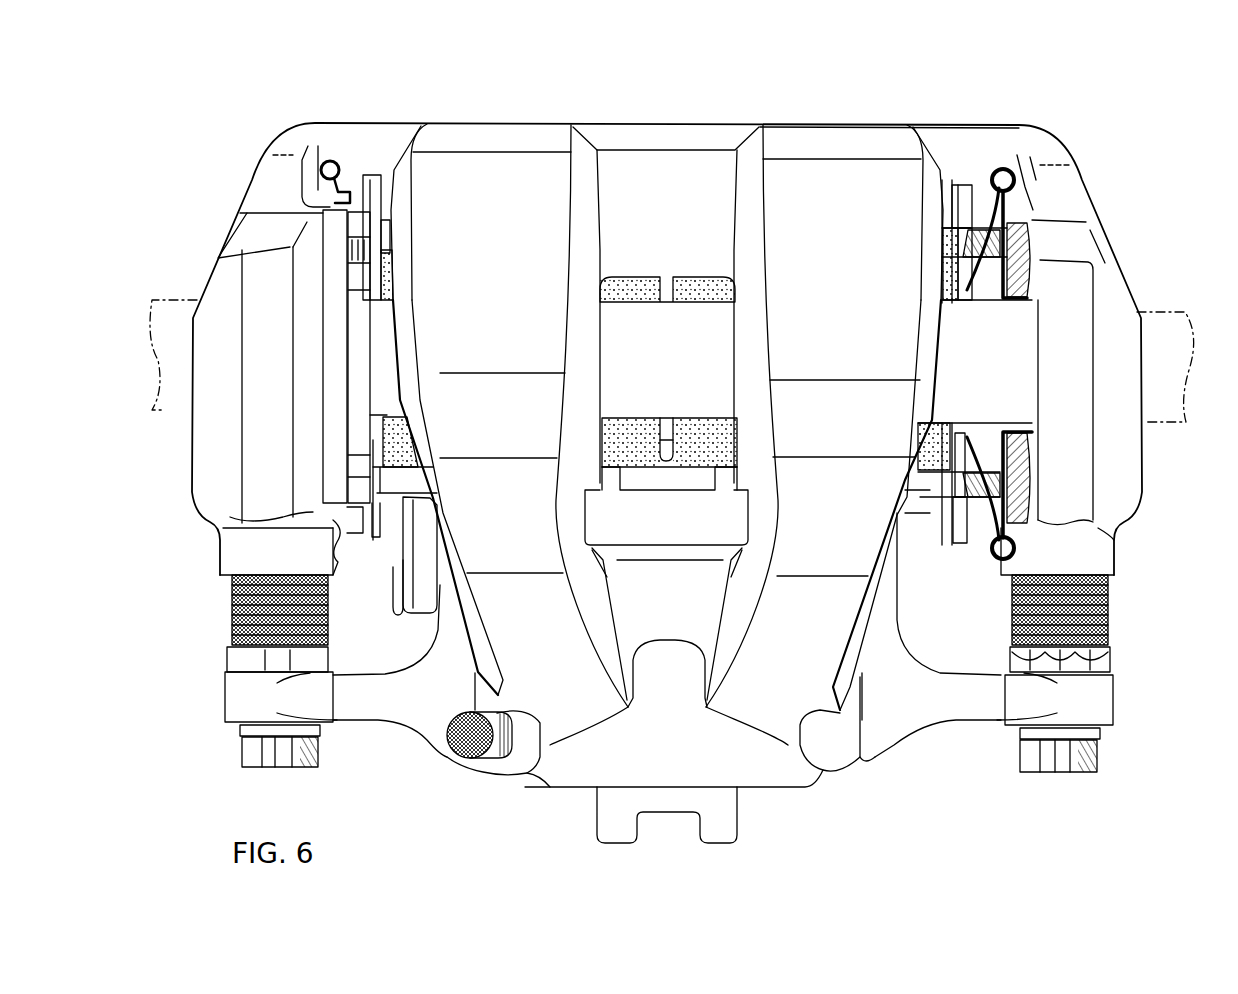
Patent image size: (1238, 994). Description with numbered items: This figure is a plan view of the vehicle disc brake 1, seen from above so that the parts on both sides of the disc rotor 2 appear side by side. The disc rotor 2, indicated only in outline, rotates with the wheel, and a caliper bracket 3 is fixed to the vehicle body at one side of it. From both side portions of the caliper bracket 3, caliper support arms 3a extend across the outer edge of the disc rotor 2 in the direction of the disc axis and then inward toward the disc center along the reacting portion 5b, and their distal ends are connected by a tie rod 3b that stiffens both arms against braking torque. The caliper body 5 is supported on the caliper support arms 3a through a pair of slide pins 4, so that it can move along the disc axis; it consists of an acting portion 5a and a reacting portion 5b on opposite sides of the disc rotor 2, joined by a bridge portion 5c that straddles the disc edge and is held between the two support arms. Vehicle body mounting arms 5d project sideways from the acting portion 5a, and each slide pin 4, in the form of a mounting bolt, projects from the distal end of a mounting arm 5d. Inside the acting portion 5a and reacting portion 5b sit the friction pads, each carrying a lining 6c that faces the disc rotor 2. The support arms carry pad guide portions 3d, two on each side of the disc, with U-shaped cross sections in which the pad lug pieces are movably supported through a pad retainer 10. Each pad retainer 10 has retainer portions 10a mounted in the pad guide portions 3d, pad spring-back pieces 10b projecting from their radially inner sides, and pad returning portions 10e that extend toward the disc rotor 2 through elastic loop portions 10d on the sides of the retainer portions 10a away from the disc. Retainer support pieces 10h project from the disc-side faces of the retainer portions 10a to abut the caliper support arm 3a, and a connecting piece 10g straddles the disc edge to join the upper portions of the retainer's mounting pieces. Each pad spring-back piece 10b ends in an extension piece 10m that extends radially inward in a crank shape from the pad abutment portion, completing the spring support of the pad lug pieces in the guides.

The disc brake assembly 1 is at (640, 80).
The disc rotor 2 is at (181, 300).
The caliper bracket 3 is at (1112, 243).
The caliper support arm 3a is at (207, 473).
The tie rod 3b is at (973, 140).
The pad guide portion 3d is at (998, 283).
The slide pin 4 is at (225, 658).
The caliper body 5 is at (562, 795).
The acting portion 5a is at (772, 780).
The reacting portion 5b is at (843, 146).
The bridge portion 5c is at (747, 337).
The vehicle body mounting arm 5d is at (238, 698).
The lining 6c is at (640, 298).
The pad retainer 10 is at (322, 455).
The retainer portion 10a is at (1010, 265).
The pad spring-back piece 10b is at (993, 220).
The elastic loop portion 10d is at (330, 160).
The pad returning portion 10e is at (950, 270).
The connecting piece 10g is at (330, 264).
The retainer support piece 10h is at (1022, 312).
The extension piece 10m is at (370, 175).